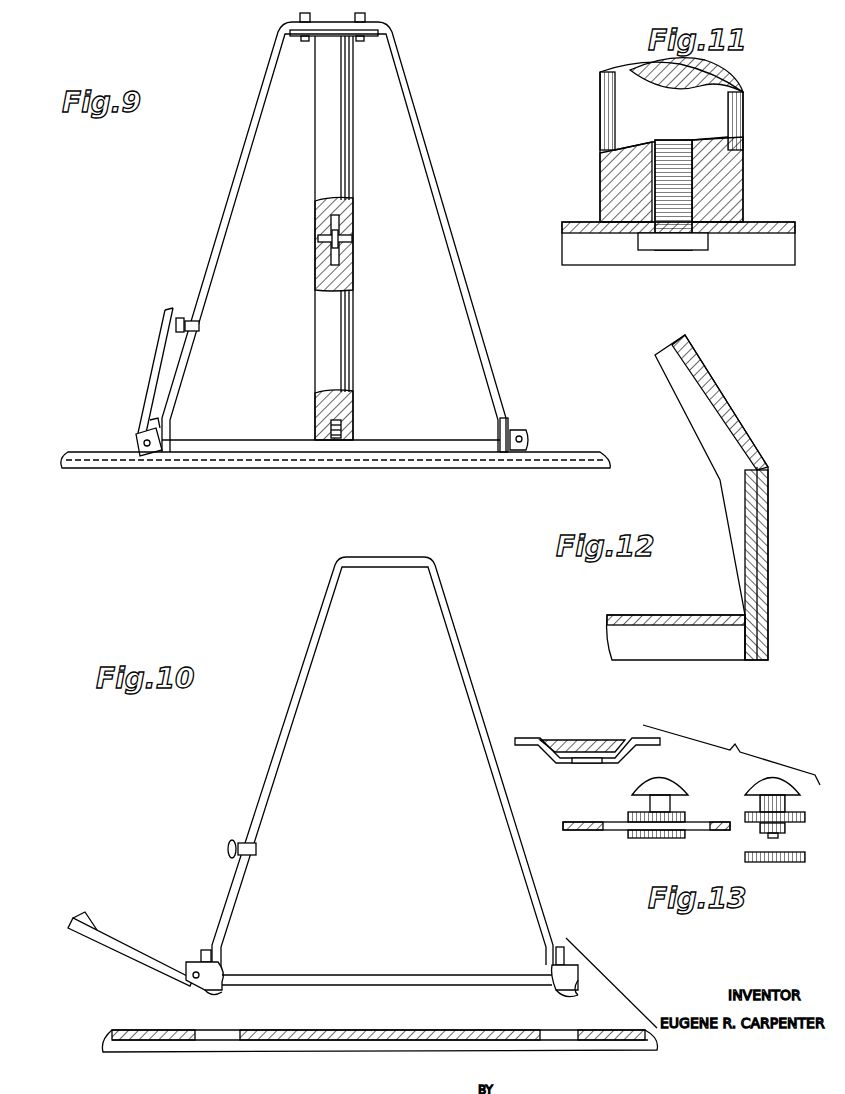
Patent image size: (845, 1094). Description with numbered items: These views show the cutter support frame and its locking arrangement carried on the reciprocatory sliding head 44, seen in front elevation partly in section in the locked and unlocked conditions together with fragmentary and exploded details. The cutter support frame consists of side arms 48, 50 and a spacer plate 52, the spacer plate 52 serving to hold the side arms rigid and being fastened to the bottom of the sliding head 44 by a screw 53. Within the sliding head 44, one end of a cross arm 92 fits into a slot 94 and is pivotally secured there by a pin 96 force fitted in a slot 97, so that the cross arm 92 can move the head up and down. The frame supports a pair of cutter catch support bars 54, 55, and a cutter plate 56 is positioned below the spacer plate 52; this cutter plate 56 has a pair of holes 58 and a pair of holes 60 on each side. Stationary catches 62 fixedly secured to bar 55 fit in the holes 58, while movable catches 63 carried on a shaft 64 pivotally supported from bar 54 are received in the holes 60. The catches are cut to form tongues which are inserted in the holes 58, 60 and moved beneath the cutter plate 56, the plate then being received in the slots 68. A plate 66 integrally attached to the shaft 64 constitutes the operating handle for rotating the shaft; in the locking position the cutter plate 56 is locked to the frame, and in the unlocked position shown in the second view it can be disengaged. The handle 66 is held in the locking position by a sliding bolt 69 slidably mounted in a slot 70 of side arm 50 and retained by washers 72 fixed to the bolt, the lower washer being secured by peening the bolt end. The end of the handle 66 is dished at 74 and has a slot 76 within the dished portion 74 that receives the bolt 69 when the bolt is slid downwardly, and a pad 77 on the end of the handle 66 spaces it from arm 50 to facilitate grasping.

In FIG. 9, the sliding head 44 is at (353, 352).
In FIG. 11, the sliding head 44 is at (745, 114).
In FIG. 9, the side arm 48 is at (437, 182).
In FIG. 12, the side arm 48 is at (730, 410).
In FIG. 10, the side arm 48 is at (382, 772).
In FIG. 9, the side arm 50 is at (232, 192).
In FIG. 13, the side arm 50 is at (722, 832).
In FIG. 9, the spacer plate 52 is at (446, 440).
In FIG. 11, the spacer plate 52 is at (732, 252).
In FIG. 12, the spacer plate 52 is at (675, 617).
In FIG. 10, the spacer plate 52 is at (386, 975).
In FIG. 9, the screw 53 is at (346, 436).
In FIG. 11, the screw 53 is at (663, 244).
In FIG. 10, the cutter catch support bar 54 is at (205, 950).
In FIG. 9, the cutter catch support bar 55 is at (510, 420).
In FIG. 12, the cutter catch support bar 55 is at (770, 520).
In FIG. 10, the cutter catch support bar 55 is at (560, 947).
In FIG. 9, the cutter plate 56 is at (582, 452).
In FIG. 10, the cutter plate 56 is at (470, 1052).
In FIG. 10, the hole 58 is at (550, 1030).
In FIG. 10, the hole 60 is at (235, 1032).
In FIG. 9, the stationary catch 62 is at (530, 438).
In FIG. 10, the stationary catch 62 is at (578, 962).
In FIG. 9, the movable catch 63 is at (170, 442).
In FIG. 10, the movable catch 63 is at (222, 975).
In FIG. 10, the shaft 64 is at (192, 962).
In FIG. 9, the plate 66 is at (155, 370).
In FIG. 10, the plate 66 is at (120, 944).
In FIG. 13, the plate 66 is at (602, 742).
In FIG. 10, the slot 68 is at (580, 987).
In FIG. 10, the sliding bolt 69 is at (228, 850).
In FIG. 13, the sliding bolt 69 is at (668, 786).
In FIG. 13, the slot 70 is at (698, 824).
In FIG. 13, the washer 72 is at (646, 840).
In FIG. 9, the dished portion 74 is at (200, 326).
In FIG. 13, the dished portion 74 is at (555, 740).
In FIG. 13, the slot 76 is at (586, 763).
In FIG. 10, the pad 77 is at (85, 918).
In FIG. 9, the cross arm 92 is at (345, 226).
In FIG. 9, the slot 94 is at (320, 264).
In FIG. 9, the pin 96 is at (354, 241).
In FIG. 9, the slot 97 is at (318, 239).